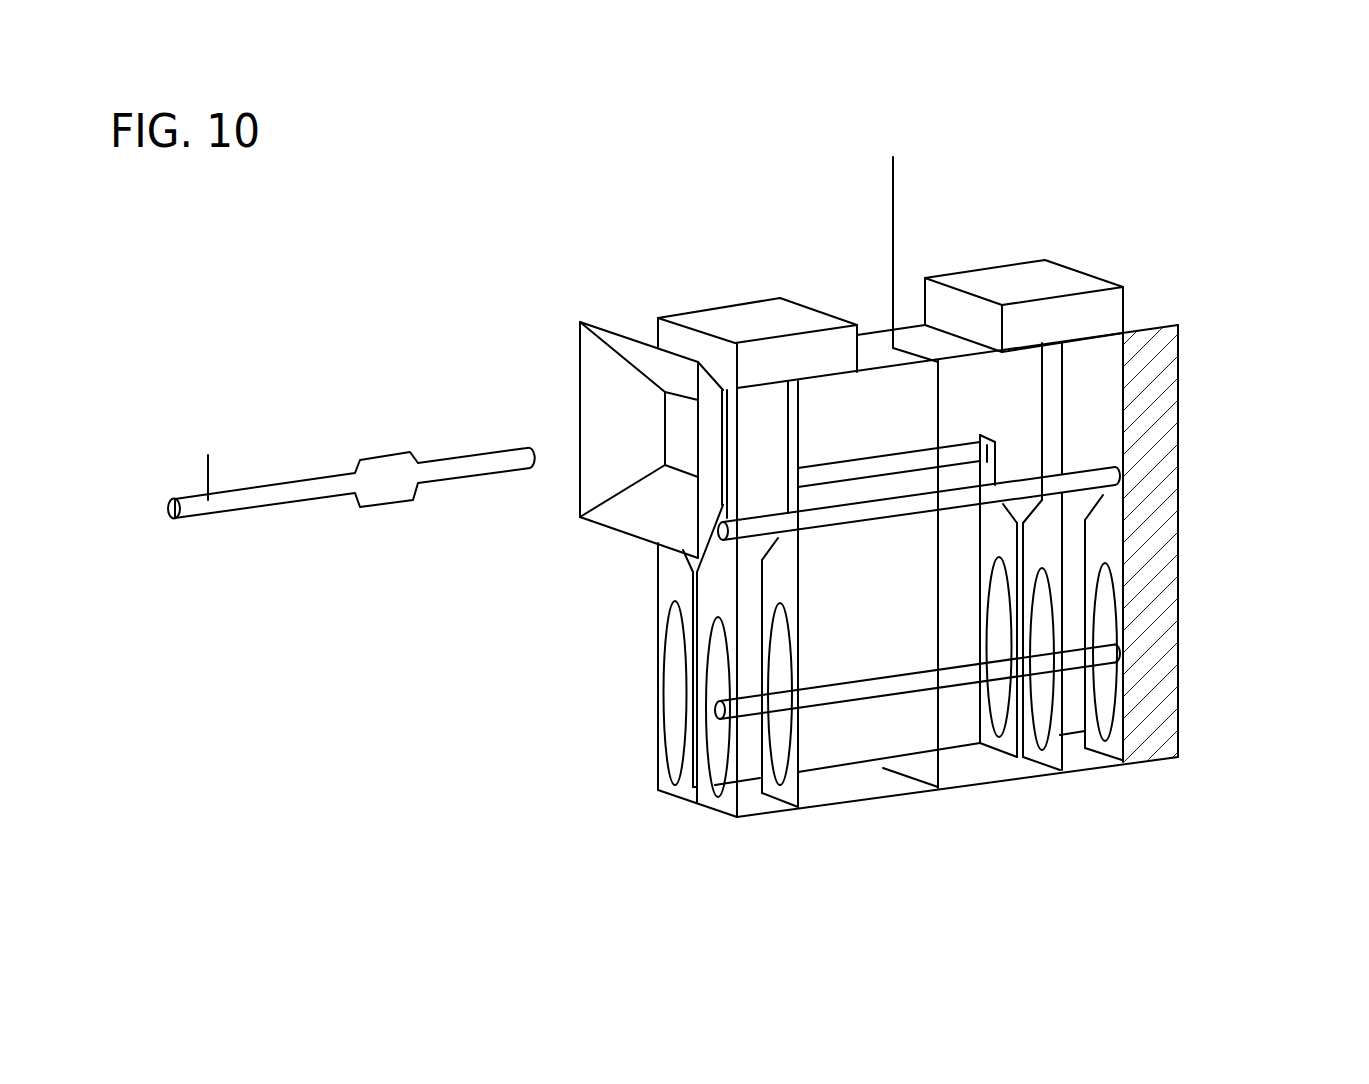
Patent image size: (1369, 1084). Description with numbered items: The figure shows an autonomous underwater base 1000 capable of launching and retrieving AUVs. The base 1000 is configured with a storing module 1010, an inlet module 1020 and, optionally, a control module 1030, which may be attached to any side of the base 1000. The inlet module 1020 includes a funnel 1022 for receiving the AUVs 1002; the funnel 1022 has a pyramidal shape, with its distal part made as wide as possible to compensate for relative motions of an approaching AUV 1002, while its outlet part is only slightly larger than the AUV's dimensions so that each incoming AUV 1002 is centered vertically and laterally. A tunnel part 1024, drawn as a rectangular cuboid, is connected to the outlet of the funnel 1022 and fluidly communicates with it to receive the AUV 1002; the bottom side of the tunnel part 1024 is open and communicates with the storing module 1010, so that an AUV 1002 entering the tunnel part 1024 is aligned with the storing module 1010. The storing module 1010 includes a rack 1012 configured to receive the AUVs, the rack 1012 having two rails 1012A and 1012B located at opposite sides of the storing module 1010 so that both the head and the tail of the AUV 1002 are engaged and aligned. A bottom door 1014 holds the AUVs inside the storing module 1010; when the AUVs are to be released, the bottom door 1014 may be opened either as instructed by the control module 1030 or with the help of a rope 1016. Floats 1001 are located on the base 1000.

The base 1000 is at (660, 183).
The floats 1001 is at (998, 263).
The AUV 1002 is at (320, 425).
The storing module 1010 is at (658, 672).
The rack 1012 is at (712, 717).
The rail 1012A is at (675, 787).
The rail 1012B is at (1087, 620).
The bottom door 1014 is at (903, 777).
The rope 1016 is at (895, 202).
The inlet module 1020 is at (580, 383).
The funnel 1022 is at (575, 496).
The tunnel part 1024 is at (898, 424).
The control module 1030 is at (1148, 394).